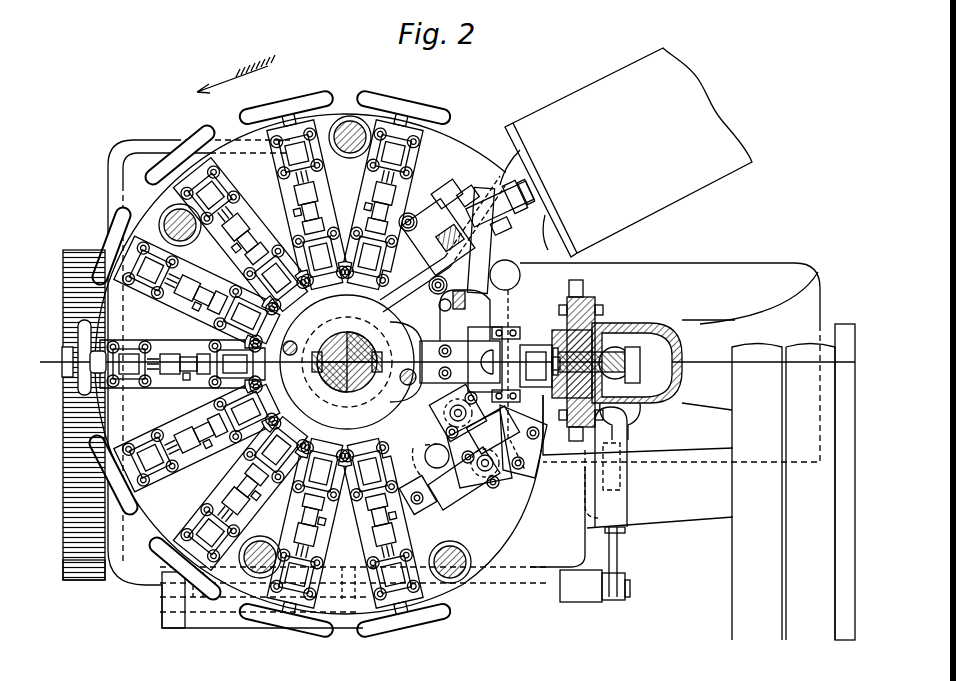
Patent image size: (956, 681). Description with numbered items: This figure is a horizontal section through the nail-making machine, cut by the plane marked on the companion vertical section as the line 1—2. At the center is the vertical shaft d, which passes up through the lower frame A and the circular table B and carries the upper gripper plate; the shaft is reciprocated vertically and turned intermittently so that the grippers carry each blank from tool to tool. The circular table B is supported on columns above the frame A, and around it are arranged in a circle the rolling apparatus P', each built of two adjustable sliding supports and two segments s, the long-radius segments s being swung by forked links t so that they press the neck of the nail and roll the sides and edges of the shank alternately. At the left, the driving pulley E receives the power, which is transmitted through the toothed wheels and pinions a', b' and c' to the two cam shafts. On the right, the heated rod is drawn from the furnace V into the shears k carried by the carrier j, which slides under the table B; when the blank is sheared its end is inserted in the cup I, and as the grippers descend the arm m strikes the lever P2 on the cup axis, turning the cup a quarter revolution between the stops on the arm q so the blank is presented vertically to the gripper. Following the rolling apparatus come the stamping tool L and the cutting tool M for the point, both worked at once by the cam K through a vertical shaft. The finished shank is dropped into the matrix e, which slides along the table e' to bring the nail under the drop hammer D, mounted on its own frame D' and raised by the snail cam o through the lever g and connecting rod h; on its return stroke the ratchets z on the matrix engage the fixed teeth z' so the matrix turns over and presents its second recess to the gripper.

The lower frame A is at (323, 380).
The circular table B is at (319, 364).
The vertical shaft d is at (345, 384).
The rolling apparatus P' is at (285, 362).
The forked links t is at (245, 212).
The rolling segments s is at (304, 392).
The toothed wheel a' is at (74, 415).
The section line 1—2 1 is at (447, 360).
The toothed pinion c' is at (75, 373).
The toothed wheel b' is at (74, 567).
The drop hammer D is at (670, 432).
The hammer frame D' is at (628, 365).
The connecting rod h is at (624, 355).
The snail cam o is at (622, 532).
The hammer lever g is at (619, 552).
The driving pulley E is at (783, 492).
The section line 1— 2 is at (845, 482).
The matrix e is at (490, 359).
The matrix table e' is at (490, 364).
The ratchets z is at (513, 360).
The teeth z' is at (538, 378).
The cup lever P2 is at (465, 315).
The arm m is at (437, 306).
The cup I is at (447, 248).
The carrier j is at (438, 237).
The stop arm q is at (452, 186).
The shears k is at (482, 196).
The furnace V is at (626, 152).
The stamping tool L is at (455, 462).
The cam K is at (430, 461).
The cutting tool M is at (492, 430).